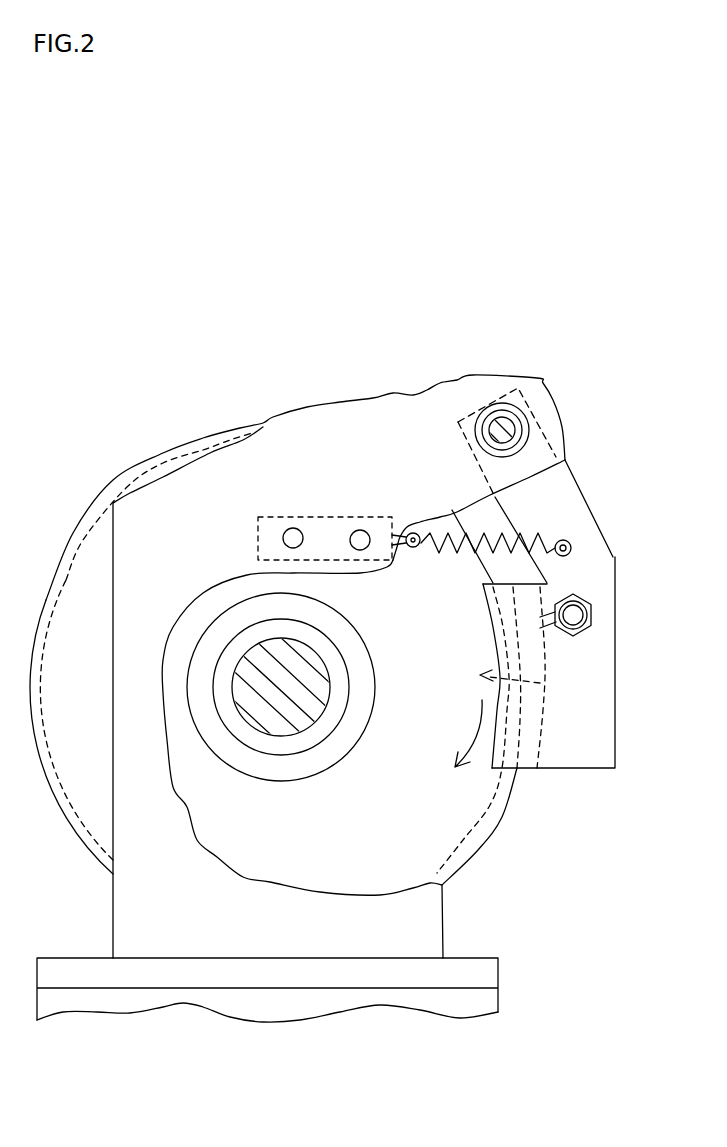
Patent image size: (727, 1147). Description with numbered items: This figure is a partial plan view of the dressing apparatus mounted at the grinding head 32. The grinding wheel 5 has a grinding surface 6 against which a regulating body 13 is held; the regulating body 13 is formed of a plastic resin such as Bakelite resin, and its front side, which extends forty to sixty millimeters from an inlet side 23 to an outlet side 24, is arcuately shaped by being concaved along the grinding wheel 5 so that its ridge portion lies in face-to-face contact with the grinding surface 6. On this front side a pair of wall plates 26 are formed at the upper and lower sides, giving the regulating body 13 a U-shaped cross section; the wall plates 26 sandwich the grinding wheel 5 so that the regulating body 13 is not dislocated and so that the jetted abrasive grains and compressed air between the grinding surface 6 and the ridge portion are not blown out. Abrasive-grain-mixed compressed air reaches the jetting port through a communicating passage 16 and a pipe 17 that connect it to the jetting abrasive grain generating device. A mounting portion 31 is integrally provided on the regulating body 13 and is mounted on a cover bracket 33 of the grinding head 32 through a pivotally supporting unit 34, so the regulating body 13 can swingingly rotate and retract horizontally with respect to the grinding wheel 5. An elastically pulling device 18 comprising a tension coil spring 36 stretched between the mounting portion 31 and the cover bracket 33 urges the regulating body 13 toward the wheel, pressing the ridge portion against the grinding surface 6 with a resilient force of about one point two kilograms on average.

The cover bracket 33 is at (387, 420).
The grinding head 32 is at (127, 820).
The tension coil spring 36 is at (457, 520).
The pivotally supporting unit 34 is at (513, 423).
The elastically pulling device 18 is at (487, 545).
The mounting portion 31 is at (585, 528).
The inlet side 23 is at (513, 582).
The pipe 17 is at (577, 617).
The regulating body 13 is at (603, 662).
The communicating passage 16 is at (540, 622).
The wall plates 26 is at (520, 707).
The outlet side 24 is at (515, 770).
The grinding surface 6 is at (503, 803).
The grinding wheel 5 is at (447, 833).